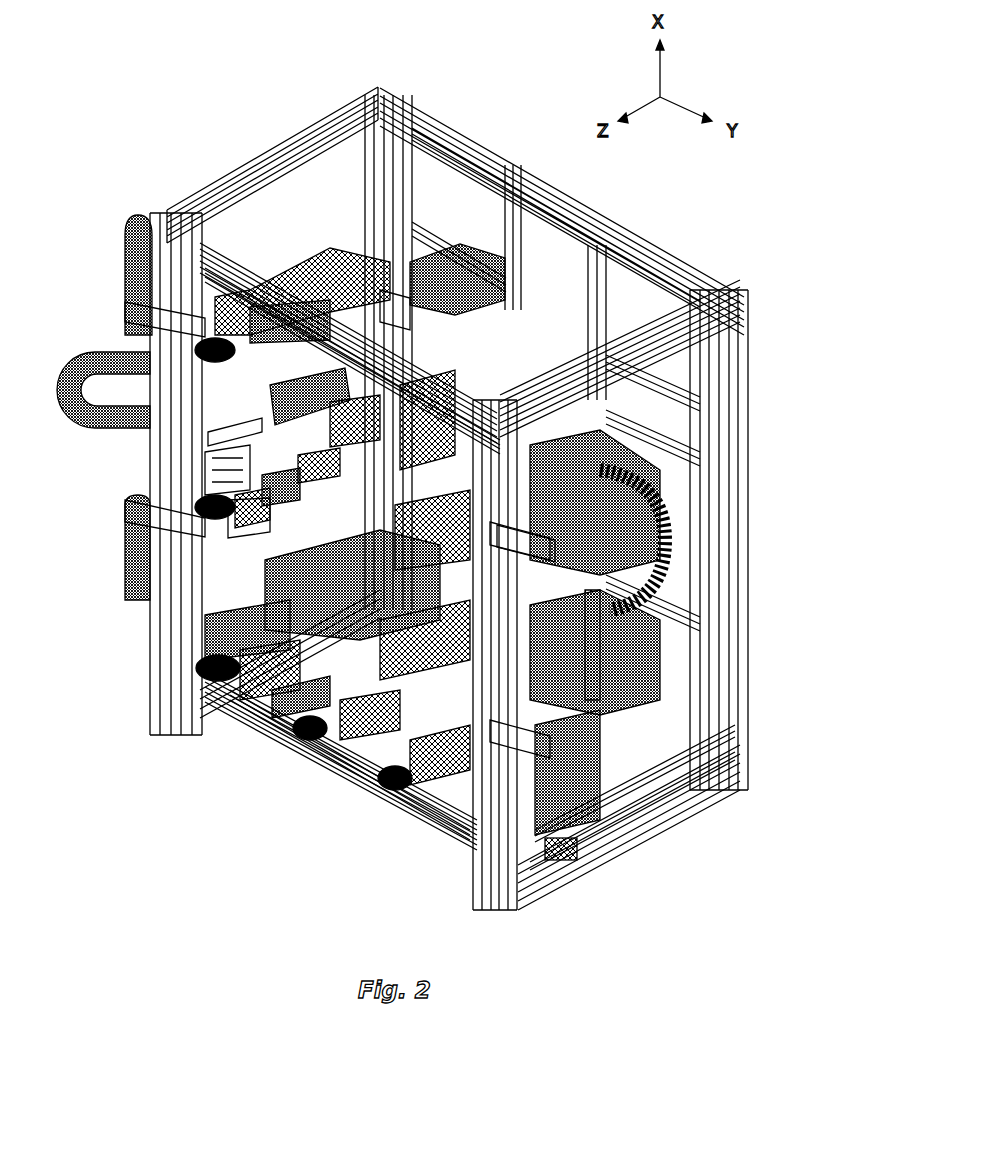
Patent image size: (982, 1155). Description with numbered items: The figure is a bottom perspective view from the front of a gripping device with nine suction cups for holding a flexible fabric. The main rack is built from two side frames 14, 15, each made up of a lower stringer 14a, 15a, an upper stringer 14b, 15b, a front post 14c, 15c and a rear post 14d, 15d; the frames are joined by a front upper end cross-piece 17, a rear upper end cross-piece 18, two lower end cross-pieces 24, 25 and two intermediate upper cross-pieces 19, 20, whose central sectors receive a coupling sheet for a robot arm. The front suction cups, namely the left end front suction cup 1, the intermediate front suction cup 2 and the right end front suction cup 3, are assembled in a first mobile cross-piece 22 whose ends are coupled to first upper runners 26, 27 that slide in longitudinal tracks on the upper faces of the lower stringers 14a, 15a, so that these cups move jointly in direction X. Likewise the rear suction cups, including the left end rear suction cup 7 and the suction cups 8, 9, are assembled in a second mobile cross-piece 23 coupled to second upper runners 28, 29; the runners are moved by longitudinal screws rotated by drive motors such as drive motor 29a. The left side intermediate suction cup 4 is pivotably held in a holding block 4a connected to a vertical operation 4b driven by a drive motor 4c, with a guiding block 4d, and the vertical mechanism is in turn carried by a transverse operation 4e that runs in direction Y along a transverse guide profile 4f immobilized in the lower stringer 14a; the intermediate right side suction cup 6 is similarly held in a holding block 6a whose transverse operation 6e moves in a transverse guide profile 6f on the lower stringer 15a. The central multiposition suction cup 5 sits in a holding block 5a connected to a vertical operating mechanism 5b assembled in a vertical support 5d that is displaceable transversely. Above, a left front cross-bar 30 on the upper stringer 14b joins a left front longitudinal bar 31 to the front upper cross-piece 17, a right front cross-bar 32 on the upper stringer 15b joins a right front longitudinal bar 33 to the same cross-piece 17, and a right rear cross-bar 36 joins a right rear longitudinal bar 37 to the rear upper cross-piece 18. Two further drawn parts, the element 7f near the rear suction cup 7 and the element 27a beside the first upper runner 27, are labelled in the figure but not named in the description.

The left end front suction cup 1 is at (203, 347).
The intermediate front suction cup 2 is at (300, 400).
The right end front suction cup 3 is at (408, 525).
The left side intermediate suction cup 4 is at (210, 513).
The holding block 4a is at (238, 527).
The vertical operation 4b is at (307, 468).
The drive motor 4c is at (347, 440).
The guiding block 4d is at (270, 483).
The transverse operation 4e is at (223, 443).
The transverse guide profile 4f is at (210, 465).
The central multiposition suction cup 5 is at (292, 567).
The holding block 5a is at (280, 703).
The vertical operating mechanism 5b is at (367, 500).
The vertical support 5d is at (457, 430).
The intermediate right side suction cup 6 is at (390, 623).
The holding block 6a is at (363, 718).
The transverse operation 6e is at (633, 687).
The transverse guide profile 6f is at (553, 710).
The left end rear suction cup 7 is at (210, 667).
The actuator slide 7f is at (210, 618).
The suction cup 8 is at (297, 740).
The suction cup 9 is at (392, 787).
The side frame 14 is at (233, 424).
The lower stringer 14a is at (163, 615).
The upper stringer 14b is at (380, 190).
The front post 14c is at (277, 152).
The rear post 14d is at (217, 722).
The side frame 15 is at (606, 602).
The lower stringer 15a is at (490, 837).
The upper stringer 15b is at (738, 675).
The front post 15c is at (727, 337).
The rear post 15d is at (693, 813).
The front upper end cross-piece 17 is at (453, 130).
The rear upper end cross-piece 18 is at (663, 732).
The intermediate upper cross-piece 19 is at (690, 437).
The intermediate upper cross-piece 20 is at (677, 543).
The first mobile cross-piece 22 is at (255, 257).
The second mobile cross-piece 23 is at (393, 723).
The lower end cross-piece 24 is at (290, 293).
The lower end cross-piece 25 is at (330, 747).
The first upper runner 26 is at (213, 278).
The first upper runner 27 is at (603, 497).
The mounting plate 27a is at (545, 565).
The second upper runner 28 is at (210, 600).
The second upper runner 29 is at (620, 843).
The drive motor 29a is at (548, 855).
The left front cross-bar 30 is at (430, 230).
The left front longitudinal bar 31 is at (520, 285).
The right front cross-bar 32 is at (695, 378).
The right front longitudinal bar 33 is at (593, 280).
The right rear cross-bar 36 is at (687, 615).
The right rear longitudinal bar 37 is at (593, 603).